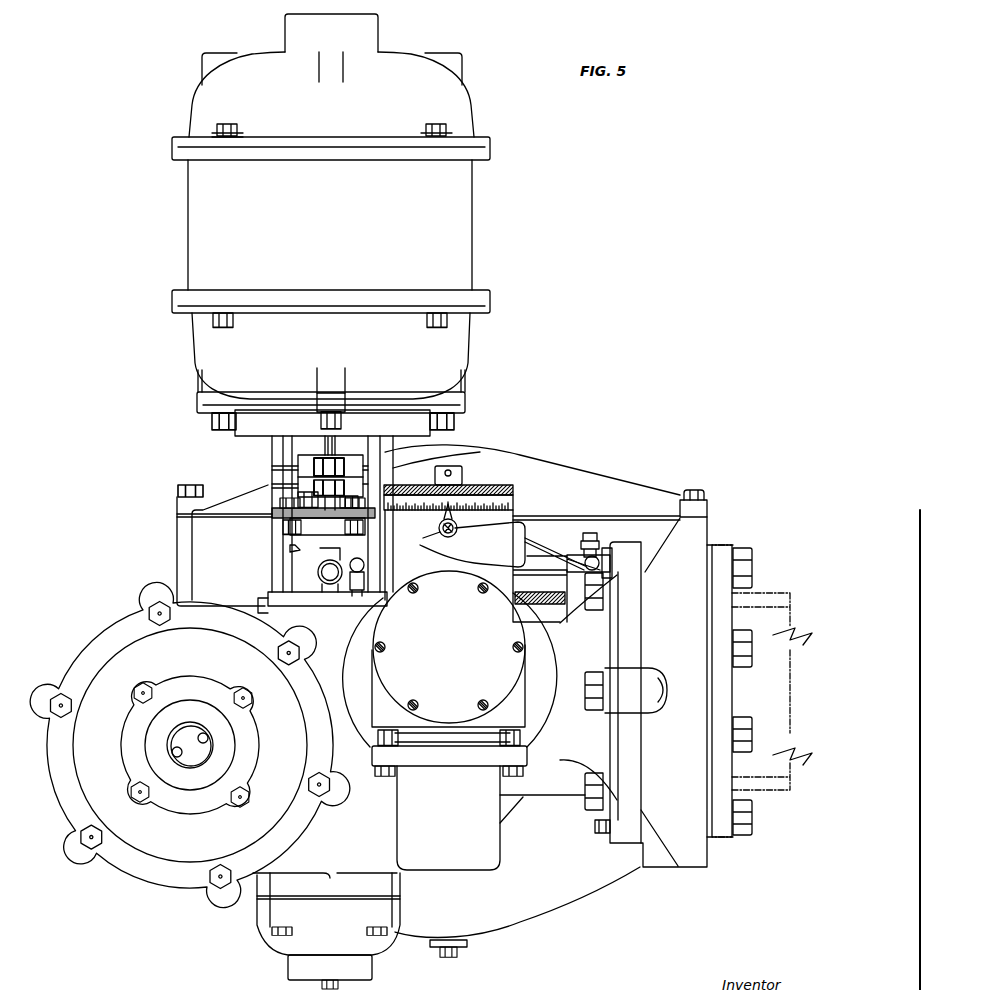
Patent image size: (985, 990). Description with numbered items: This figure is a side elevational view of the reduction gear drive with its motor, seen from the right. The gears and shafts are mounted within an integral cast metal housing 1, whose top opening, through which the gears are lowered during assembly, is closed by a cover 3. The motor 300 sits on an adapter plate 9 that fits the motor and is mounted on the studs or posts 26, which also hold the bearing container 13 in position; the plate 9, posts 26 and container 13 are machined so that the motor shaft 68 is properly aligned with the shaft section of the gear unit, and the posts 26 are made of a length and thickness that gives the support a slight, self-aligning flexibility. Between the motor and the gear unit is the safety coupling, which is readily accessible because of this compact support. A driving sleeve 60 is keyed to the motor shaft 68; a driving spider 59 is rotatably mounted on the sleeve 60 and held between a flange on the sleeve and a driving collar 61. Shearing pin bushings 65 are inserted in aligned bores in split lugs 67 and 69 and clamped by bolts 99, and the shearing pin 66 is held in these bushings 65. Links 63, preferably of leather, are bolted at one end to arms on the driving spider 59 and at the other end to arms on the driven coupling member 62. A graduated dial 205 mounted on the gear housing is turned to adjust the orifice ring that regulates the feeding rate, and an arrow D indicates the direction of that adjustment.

The motor 300 is at (474, 219).
The adapter plate 9 is at (472, 399).
The posts 26 is at (284, 441).
The bearing container 13 is at (259, 600).
The driving sleeve 60 is at (319, 457).
The shearing pin 66 is at (335, 455).
The split lug 67 is at (346, 455).
The motor shaft 68 is at (338, 455).
The shearing pin bushings 65 is at (298, 468).
The driving spider 59 is at (298, 486).
The driving collar 61 is at (376, 470).
The links 63 is at (276, 512).
The split lug 69 is at (340, 520).
The bolts 99 is at (432, 446).
The graduated dial 205 is at (531, 470).
The driven coupling member 62 is at (381, 527).
The direction of adjustment D is at (545, 488).
The cover 3 is at (646, 492).
The housing 1 is at (561, 917).